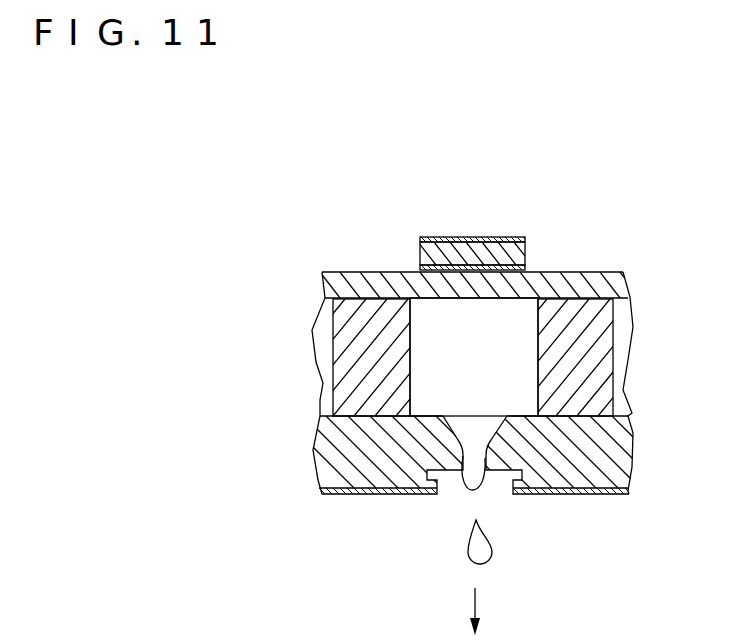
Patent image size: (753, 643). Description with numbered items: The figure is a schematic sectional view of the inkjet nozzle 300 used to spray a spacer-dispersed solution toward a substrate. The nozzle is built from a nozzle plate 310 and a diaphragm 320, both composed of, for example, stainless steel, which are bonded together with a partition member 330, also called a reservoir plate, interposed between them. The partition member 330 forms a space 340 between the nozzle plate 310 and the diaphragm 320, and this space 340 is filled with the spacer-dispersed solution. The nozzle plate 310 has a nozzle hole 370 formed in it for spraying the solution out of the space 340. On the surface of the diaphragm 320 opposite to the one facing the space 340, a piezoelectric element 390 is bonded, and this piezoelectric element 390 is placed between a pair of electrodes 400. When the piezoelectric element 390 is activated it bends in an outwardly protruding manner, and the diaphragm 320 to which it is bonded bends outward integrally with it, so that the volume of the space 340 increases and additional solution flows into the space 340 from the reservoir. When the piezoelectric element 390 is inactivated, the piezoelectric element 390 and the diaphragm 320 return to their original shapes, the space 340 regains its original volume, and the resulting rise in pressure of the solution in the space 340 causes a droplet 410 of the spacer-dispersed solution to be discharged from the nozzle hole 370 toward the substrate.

The inkjet nozzle 300 is at (494, 193).
The nozzle plate 310 is at (617, 452).
The diaphragm 320 is at (325, 282).
The partition member 330 is at (337, 374).
The space 340 is at (520, 338).
The nozzle hole 370 is at (470, 489).
The piezoelectric element 390 is at (527, 249).
The electrodes 400 is at (447, 237).
The droplet 410 is at (483, 548).